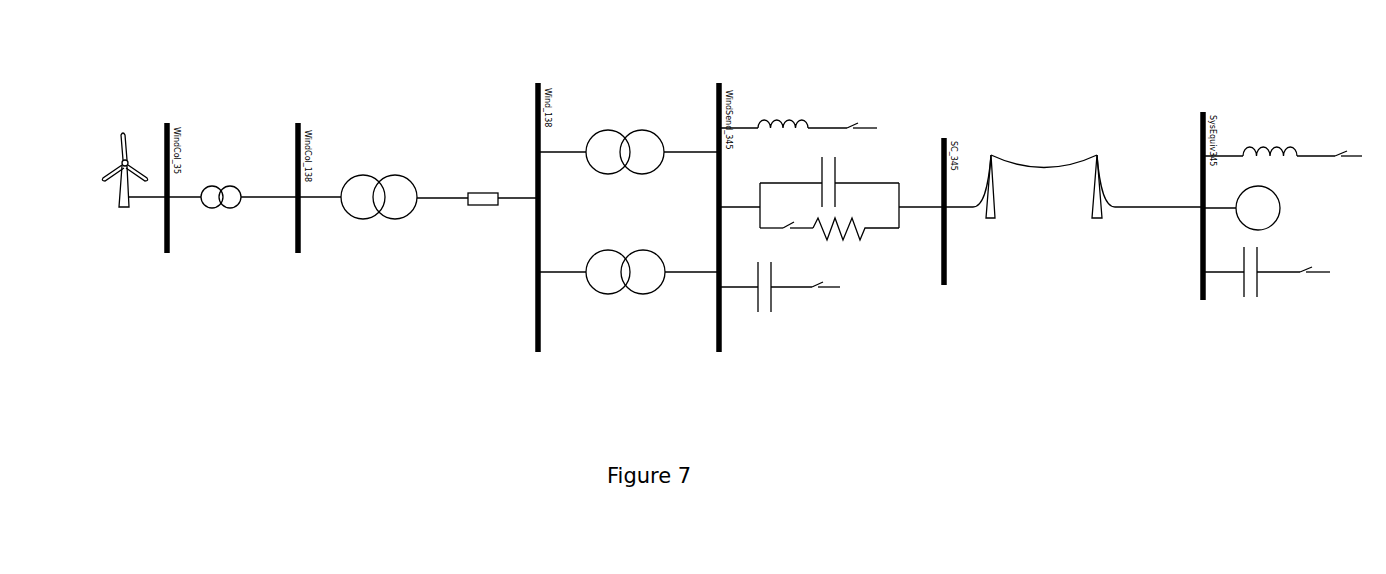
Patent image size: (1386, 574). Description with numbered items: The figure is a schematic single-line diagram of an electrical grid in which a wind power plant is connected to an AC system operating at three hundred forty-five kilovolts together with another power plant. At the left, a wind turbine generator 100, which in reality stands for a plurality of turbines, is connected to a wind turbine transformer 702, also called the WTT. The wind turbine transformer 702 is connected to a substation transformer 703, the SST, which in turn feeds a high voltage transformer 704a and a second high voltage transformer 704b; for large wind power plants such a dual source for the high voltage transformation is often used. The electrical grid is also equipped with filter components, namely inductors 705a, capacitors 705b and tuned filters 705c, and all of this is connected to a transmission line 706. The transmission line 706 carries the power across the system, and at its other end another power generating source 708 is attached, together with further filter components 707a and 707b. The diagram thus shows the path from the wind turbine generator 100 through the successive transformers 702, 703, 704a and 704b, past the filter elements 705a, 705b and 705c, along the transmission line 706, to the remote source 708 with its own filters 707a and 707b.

The wind turbine generator 100 is at (130, 122).
The wind turbine transformer 702 is at (228, 140).
The substation transformer 703 is at (370, 142).
The high voltage transformer 704a is at (627, 113).
The high voltage transformer 704b is at (627, 315).
The inductor 705a is at (828, 75).
The capacitor 705b is at (785, 317).
The tuned filter 705c is at (882, 245).
The transmission line 706 is at (1040, 145).
The filter component 707a is at (1278, 137).
The filter component 707b is at (1252, 307).
The power generating source 708 is at (1227, 223).